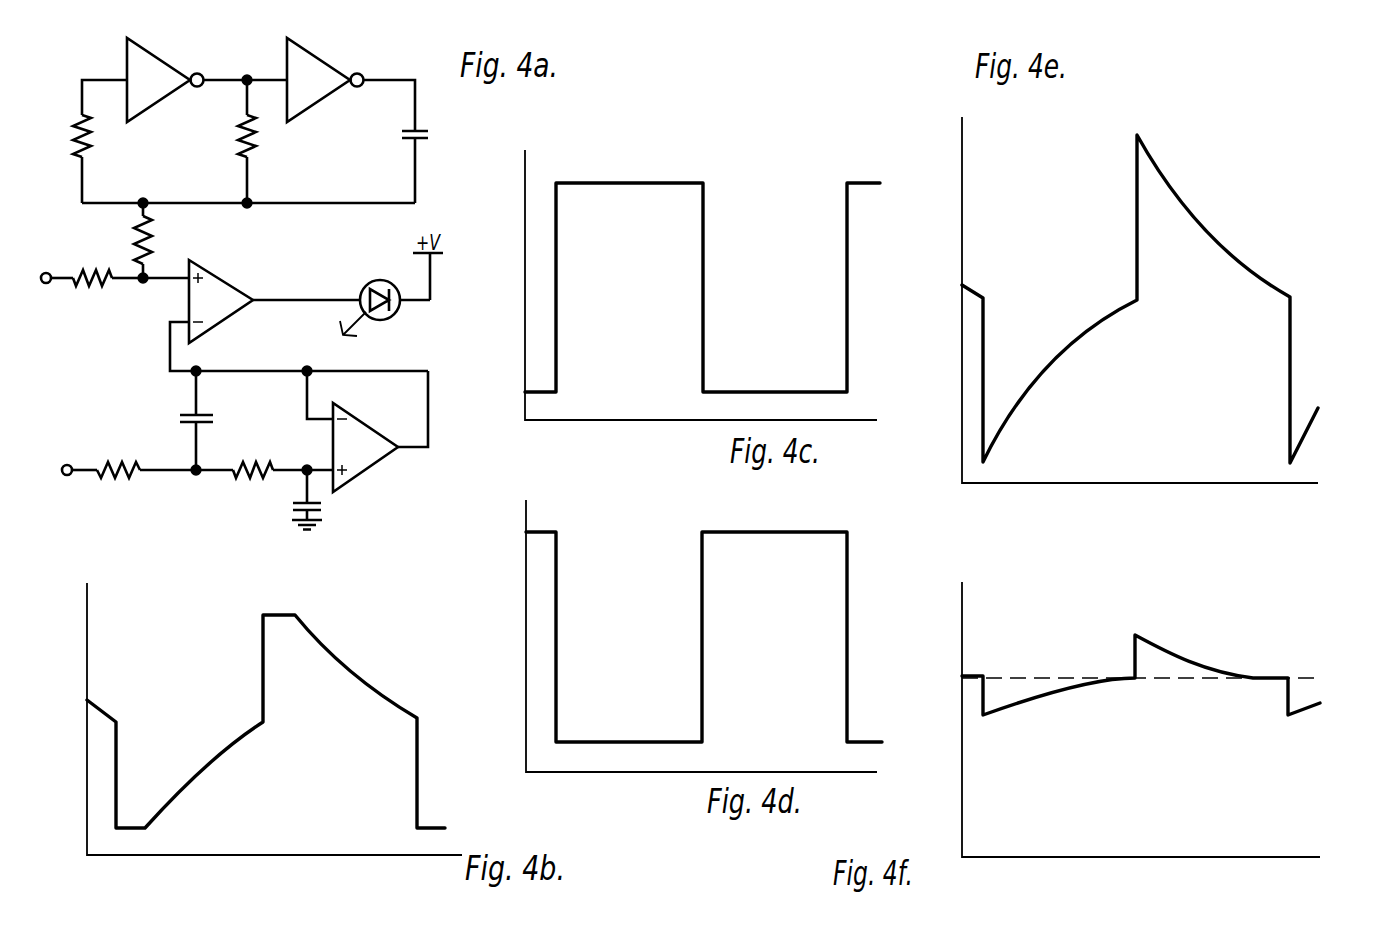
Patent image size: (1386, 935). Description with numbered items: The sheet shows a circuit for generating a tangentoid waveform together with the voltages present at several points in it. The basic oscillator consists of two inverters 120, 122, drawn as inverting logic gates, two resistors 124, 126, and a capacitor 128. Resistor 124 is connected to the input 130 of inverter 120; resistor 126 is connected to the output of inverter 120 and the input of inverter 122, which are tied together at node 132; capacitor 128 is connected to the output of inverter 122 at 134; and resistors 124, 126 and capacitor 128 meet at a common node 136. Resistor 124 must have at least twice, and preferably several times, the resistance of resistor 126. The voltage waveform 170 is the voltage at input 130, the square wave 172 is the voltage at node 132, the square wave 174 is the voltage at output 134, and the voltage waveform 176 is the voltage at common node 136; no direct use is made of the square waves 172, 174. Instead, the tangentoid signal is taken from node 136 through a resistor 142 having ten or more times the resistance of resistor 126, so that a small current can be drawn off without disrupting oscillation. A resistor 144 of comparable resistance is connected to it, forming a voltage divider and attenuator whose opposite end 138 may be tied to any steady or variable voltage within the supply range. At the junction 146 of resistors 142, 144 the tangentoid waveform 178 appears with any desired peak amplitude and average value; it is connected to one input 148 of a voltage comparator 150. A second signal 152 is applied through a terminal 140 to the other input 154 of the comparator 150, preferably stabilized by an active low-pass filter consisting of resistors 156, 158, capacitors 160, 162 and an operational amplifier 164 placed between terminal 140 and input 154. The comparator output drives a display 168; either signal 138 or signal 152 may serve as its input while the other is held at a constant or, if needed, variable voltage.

In FIG. 4A, the inverter 120 is at (189, 68).
In FIG. 4A, the inverter 122 is at (351, 65).
In FIG. 4A, the resistor 124 is at (90, 136).
In FIG. 4A, the resistor 126 is at (251, 150).
In FIG. 4A, the capacitor 128 is at (401, 137).
In FIG. 4A, the input 130 is at (97, 78).
In FIG. 4A, the node 132 is at (246, 77).
In FIG. 4A, the output 134 is at (414, 77).
In FIG. 4A, the common node 136 is at (250, 206).
In FIG. 4A, the opposite end 138 is at (58, 258).
In FIG. 4A, the terminal 140 is at (66, 465).
In FIG. 4A, the resistor 142 is at (136, 226).
In FIG. 4A, the resistor 144 is at (82, 290).
In FIG. 4A, the junction 146 is at (141, 285).
In FIG. 4A, the input 148 is at (164, 275).
In FIG. 4A, the voltage comparator 150 is at (225, 280).
In FIG. 4A, the second signal 152 is at (88, 473).
In FIG. 4A, the input 154 is at (169, 342).
In FIG. 4A, the resistor 156 is at (136, 480).
In FIG. 4A, the resistor 158 is at (248, 482).
In FIG. 4A, the capacitor 160 is at (180, 414).
In FIG. 4A, the capacitor 162 is at (320, 507).
In FIG. 4A, the operational amplifier 164 is at (361, 470).
In FIG. 4A, the display 168 is at (366, 287).
In FIG. 4B, the voltage waveform 170 is at (280, 613).
In FIG. 4C, the square wave 172 is at (602, 181).
In FIG. 4D, the square wave 174 is at (540, 529).
In FIG. 4E, the voltage waveform 176 is at (983, 320).
In FIG. 4F, the tangentoid waveform 178 is at (968, 676).